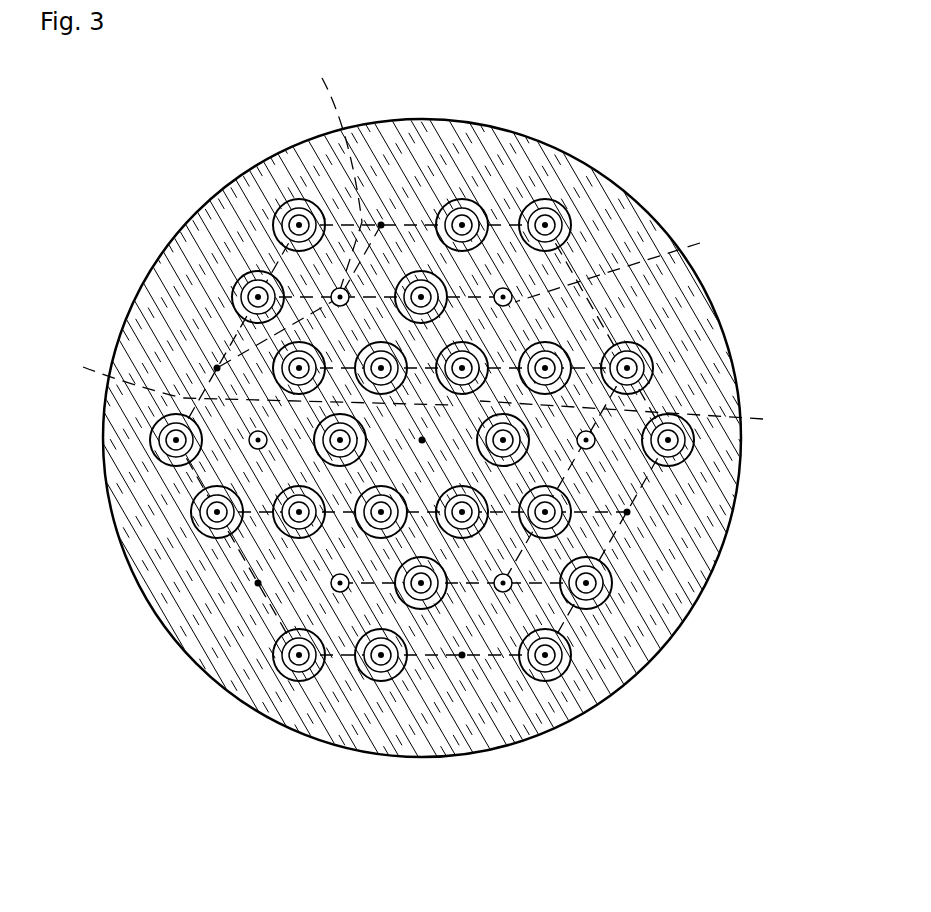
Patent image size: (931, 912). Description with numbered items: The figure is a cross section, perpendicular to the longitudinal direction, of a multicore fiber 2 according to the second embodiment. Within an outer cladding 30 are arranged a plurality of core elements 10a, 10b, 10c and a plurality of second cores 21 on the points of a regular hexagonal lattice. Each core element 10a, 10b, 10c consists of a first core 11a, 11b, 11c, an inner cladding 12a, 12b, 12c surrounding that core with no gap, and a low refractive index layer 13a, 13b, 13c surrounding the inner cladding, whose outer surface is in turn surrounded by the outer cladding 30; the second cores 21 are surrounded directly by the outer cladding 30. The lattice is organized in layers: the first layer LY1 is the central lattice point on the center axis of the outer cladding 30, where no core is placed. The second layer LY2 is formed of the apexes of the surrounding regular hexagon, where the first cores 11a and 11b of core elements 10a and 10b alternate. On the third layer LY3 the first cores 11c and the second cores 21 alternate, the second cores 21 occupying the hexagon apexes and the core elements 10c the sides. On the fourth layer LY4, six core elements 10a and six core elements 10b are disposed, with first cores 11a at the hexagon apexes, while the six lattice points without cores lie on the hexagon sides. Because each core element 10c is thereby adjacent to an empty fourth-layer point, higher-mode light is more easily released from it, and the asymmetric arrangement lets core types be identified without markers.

The multicore fiber 2 is at (678, 94).
The core element 10a is at (424, 444).
The core element 10b is at (420, 448).
The core element 10c is at (343, 288).
The first core 11a is at (546, 197).
The first core 11b is at (462, 215).
The first core 11c is at (430, 592).
The inner cladding 12a is at (561, 232).
The inner cladding 12b is at (420, 280).
The inner cladding 12c is at (424, 600).
The low refractive index layer 13a is at (562, 247).
The low refractive index layer 13b is at (480, 208).
The low refractive index layer 13c is at (415, 607).
The second core 21 is at (374, 224).
The outer cladding 30 is at (708, 375).
The first layer LY1 is at (247, 380).
The second layer LY2 is at (638, 416).
The third layer LY3 is at (624, 259).
The fourth layer LY4 is at (329, 173).